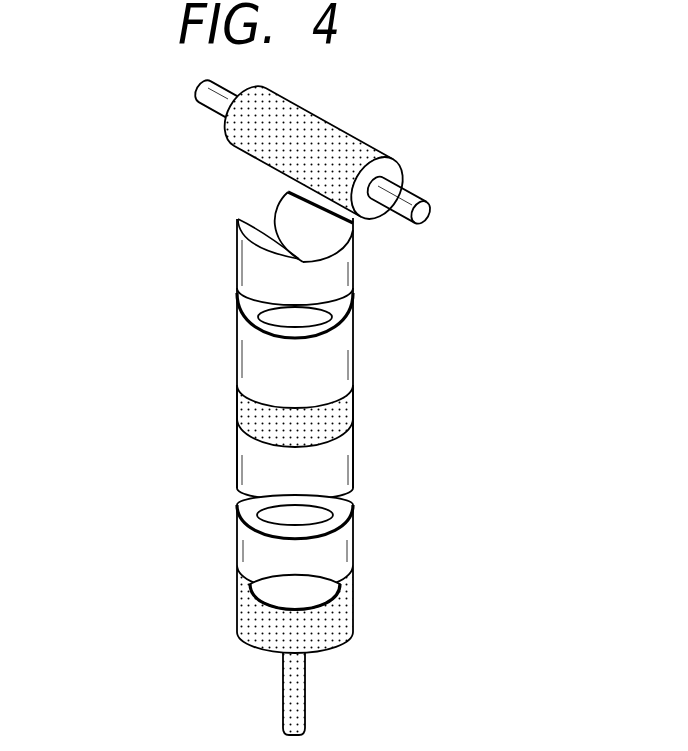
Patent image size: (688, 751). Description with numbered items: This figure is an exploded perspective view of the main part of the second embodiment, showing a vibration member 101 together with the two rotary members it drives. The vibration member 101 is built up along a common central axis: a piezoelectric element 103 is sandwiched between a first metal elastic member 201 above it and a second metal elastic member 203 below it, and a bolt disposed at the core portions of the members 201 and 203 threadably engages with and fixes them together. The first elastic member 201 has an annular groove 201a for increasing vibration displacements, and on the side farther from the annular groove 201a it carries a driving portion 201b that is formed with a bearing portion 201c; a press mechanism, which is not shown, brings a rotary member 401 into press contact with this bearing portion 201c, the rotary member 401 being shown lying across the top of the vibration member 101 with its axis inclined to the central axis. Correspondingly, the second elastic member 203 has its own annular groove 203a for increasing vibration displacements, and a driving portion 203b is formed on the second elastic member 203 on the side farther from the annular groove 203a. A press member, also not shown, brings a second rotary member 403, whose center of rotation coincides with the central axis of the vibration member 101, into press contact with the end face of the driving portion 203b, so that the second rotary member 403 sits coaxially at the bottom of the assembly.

The rotary member 401 is at (343, 133).
The first metal elastic member 201 is at (346, 343).
The annular groove 201a is at (255, 313).
The driving portion 201b is at (258, 276).
The bearing portion 201c is at (270, 216).
The piezoelectric element 103 is at (348, 408).
The second metal elastic member 203 is at (340, 452).
The annular groove 203a is at (246, 503).
The driving portion 203b is at (244, 534).
The second rotary member 403 is at (348, 620).
The vibration member 101 is at (427, 462).